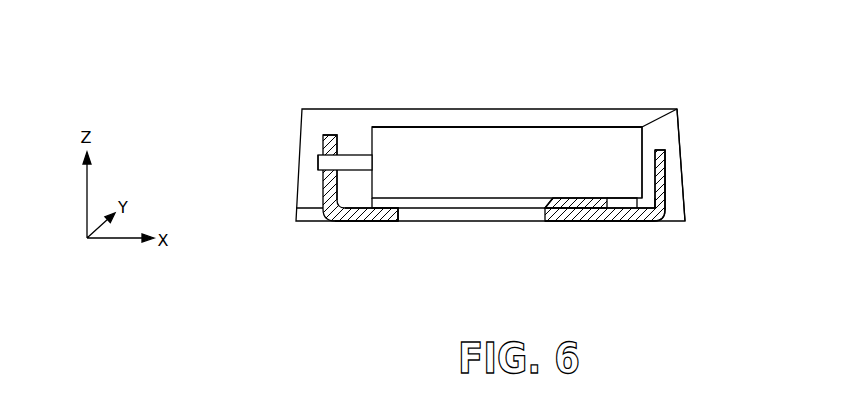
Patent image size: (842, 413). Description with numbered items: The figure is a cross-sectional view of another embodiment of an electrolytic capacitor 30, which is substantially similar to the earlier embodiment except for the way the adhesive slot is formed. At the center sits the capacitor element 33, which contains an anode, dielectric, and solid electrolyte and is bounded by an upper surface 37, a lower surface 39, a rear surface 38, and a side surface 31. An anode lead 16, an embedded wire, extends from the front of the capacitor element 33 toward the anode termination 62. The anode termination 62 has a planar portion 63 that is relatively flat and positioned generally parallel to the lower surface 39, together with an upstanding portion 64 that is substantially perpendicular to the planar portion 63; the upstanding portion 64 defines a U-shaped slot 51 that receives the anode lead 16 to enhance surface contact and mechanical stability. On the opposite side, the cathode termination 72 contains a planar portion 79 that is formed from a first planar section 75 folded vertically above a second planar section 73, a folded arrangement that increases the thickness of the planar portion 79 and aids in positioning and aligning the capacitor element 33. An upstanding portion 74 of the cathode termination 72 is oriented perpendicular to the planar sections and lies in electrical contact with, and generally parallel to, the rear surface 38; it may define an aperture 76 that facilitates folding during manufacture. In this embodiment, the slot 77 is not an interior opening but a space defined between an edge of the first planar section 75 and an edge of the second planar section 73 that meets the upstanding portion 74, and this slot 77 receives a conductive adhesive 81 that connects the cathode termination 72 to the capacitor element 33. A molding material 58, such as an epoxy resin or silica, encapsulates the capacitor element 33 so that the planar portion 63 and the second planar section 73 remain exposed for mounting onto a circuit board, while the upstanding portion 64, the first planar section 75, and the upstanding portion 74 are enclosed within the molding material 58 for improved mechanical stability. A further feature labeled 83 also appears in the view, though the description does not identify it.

The capacitor 30 is at (510, 80).
The anode lead 16 is at (353, 153).
The upper surface 37 is at (418, 128).
The capacitor element 33 is at (580, 120).
The rear surface 38 is at (648, 128).
The molding material 58 is at (672, 127).
The slot 51 is at (318, 162).
The upstanding portion 64 is at (320, 190).
The anode termination 62 is at (331, 231).
The planar portion 63 is at (396, 222).
The lower surface 39 is at (473, 209).
The base projection 83 is at (387, 202).
The side surface 31 is at (494, 164).
The planar portion 79 is at (544, 192).
The first planar section 75 is at (563, 199).
The slot 77 is at (642, 186).
The upstanding portion 74 is at (660, 155).
The aperture 76 is at (680, 180).
The conductive adhesive 81 is at (655, 219).
The cathode termination 72 is at (618, 232).
The second planar section 73 is at (598, 221).